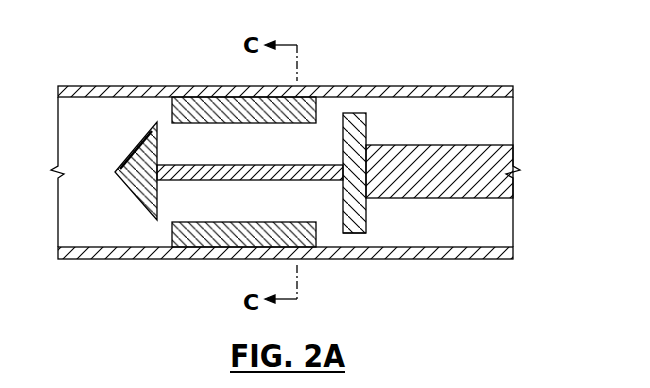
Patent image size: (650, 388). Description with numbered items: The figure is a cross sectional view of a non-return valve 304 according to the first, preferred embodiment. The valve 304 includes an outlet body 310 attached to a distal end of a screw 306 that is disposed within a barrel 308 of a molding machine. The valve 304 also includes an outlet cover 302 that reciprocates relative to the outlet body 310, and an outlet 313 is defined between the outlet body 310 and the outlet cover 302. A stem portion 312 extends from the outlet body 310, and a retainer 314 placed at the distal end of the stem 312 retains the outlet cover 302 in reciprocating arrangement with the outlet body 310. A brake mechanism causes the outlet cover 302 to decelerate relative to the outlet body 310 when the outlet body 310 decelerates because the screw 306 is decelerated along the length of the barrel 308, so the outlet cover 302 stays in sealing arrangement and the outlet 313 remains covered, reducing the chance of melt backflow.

The outlet cover 302 is at (200, 108).
The non-return valve 304 is at (285, 165).
The screw 306 is at (485, 167).
The barrel 308 is at (400, 252).
The outlet body 310 is at (357, 127).
The stem portion 312 is at (188, 177).
The outlet 313 is at (355, 238).
The retainer 314 is at (133, 174).